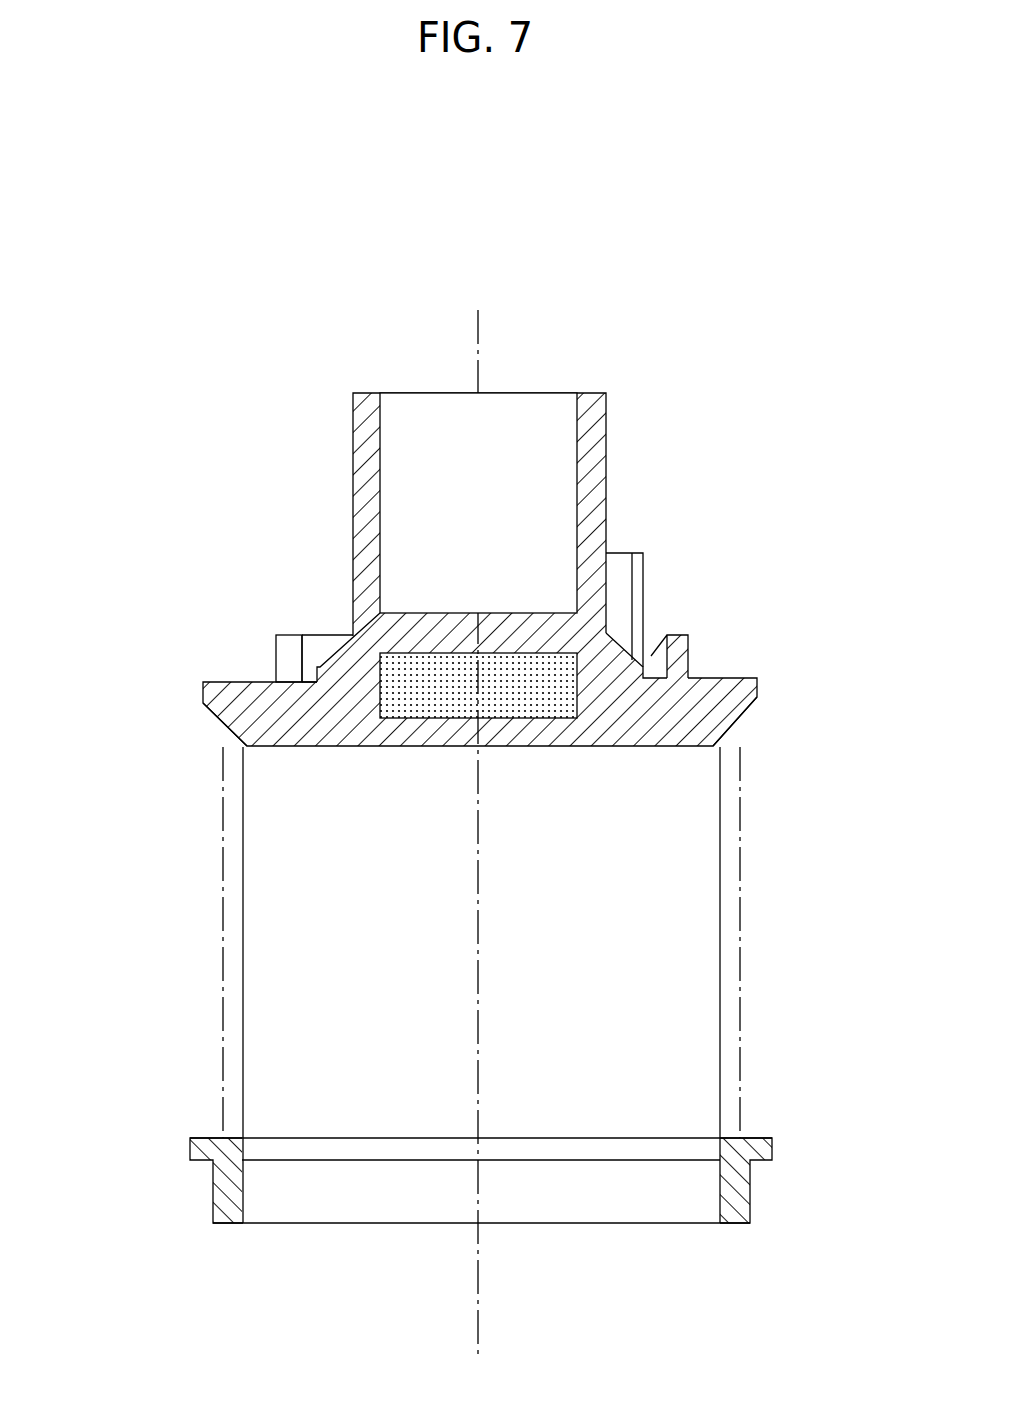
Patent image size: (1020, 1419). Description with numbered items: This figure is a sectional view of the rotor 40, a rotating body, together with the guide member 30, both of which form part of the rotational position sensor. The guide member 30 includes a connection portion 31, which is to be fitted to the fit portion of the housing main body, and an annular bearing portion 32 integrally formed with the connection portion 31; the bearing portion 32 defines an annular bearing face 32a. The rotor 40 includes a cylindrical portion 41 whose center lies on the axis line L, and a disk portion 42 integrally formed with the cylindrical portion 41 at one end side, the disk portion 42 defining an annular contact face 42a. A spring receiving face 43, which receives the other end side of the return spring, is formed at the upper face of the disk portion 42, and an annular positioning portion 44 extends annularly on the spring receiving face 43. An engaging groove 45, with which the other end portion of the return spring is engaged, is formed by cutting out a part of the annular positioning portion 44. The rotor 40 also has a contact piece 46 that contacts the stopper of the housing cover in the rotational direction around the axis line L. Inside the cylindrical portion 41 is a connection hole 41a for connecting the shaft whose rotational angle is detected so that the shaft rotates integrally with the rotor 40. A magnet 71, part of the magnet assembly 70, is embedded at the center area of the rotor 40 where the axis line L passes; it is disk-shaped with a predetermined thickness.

The guide member 30 is at (789, 1133).
The connection portion 31 is at (735, 1215).
The annular bearing portion 32 is at (758, 1138).
The annular bearing face 32a is at (733, 1138).
The rotor 40 is at (747, 510).
The cylindrical portion 41 is at (356, 417).
The connection hole 41a is at (398, 455).
The disk portion 42 is at (228, 690).
The annular contact face 42a is at (222, 725).
The spring receiving face 43 is at (263, 678).
The annular positioning portion 44 is at (672, 634).
The engaging groove 45 is at (289, 650).
The contact piece 46 is at (623, 553).
The sealing member 70 is at (497, 781).
The magnet 71 is at (540, 708).
The axis line L is at (478, 338).